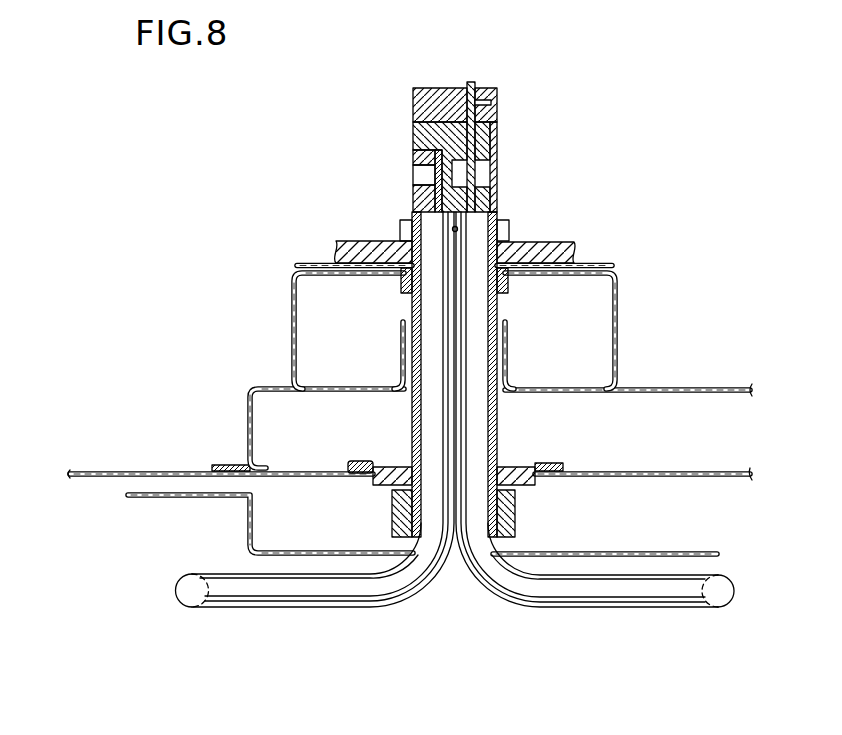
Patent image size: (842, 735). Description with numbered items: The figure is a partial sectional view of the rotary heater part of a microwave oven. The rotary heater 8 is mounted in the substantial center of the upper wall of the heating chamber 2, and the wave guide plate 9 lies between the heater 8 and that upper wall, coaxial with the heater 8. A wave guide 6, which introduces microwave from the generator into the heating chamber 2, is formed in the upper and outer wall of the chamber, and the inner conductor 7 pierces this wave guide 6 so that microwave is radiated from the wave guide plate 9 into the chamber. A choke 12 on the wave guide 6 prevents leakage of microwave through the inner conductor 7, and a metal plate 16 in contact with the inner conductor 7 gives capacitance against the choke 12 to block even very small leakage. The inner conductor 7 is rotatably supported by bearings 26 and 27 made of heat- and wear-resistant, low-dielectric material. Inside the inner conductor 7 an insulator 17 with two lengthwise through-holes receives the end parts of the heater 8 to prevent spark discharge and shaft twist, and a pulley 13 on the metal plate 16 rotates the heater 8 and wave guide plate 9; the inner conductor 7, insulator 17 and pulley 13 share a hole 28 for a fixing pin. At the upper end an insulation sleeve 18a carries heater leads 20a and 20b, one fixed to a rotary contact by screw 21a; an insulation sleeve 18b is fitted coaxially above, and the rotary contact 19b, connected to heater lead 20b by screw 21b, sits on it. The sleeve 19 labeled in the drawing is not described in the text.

The heating chamber 2 is at (100, 550).
The wave guide 6 is at (258, 412).
The inner conductor 7 is at (411, 437).
The rotary heater 8 is at (187, 593).
The wave guide plate 9 is at (148, 492).
The choke 12 is at (325, 341).
The pulley 13 is at (335, 243).
The metal plate 16 is at (325, 264).
The insulator 17 is at (410, 235).
The insulation sleeve 18a is at (418, 201).
The insulation sleeve 18b is at (428, 138).
The sleeve 19 is at (497, 172).
The rotary contact 19b is at (497, 86).
The heater lead 20a is at (428, 128).
The heater lead 20b is at (470, 87).
The screw 21a is at (420, 178).
The screw 21b is at (482, 102).
The bearing 26 is at (373, 486).
The bearing 27 is at (387, 278).
The hole 28 is at (457, 228).